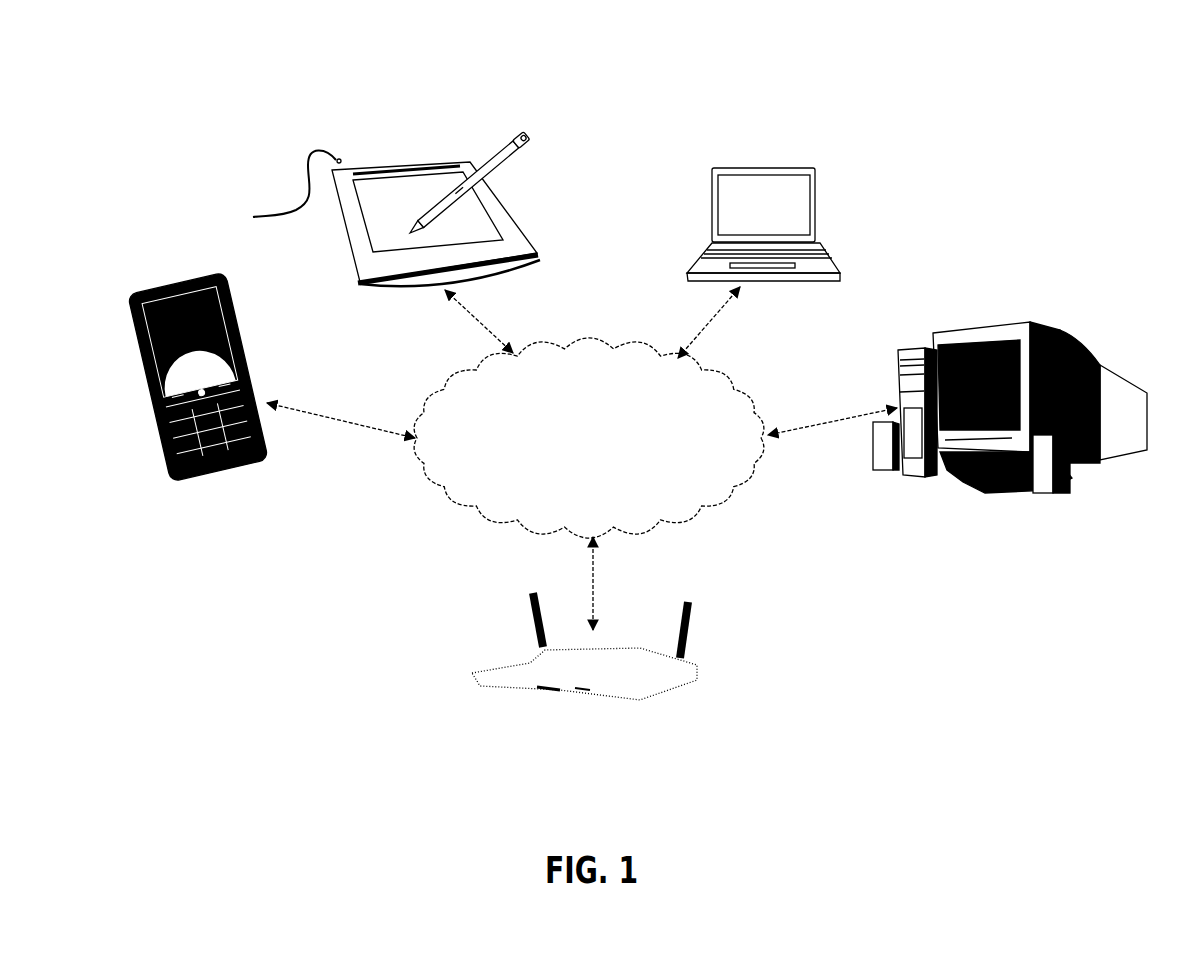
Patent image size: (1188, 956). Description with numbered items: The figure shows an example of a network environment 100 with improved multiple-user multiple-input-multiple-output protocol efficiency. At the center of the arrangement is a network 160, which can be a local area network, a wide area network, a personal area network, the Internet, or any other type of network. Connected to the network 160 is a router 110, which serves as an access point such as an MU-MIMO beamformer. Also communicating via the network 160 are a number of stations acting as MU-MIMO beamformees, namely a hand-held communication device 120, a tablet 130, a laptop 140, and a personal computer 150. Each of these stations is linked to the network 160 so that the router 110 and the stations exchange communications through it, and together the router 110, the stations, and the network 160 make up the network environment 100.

The network environment 100 is at (977, 113).
The router 110 is at (603, 698).
The hand-held communication device 120 is at (211, 274).
The tablet 130 is at (417, 160).
The laptop 140 is at (776, 165).
The personal computer 150 is at (1048, 320).
The network 160 is at (575, 462).